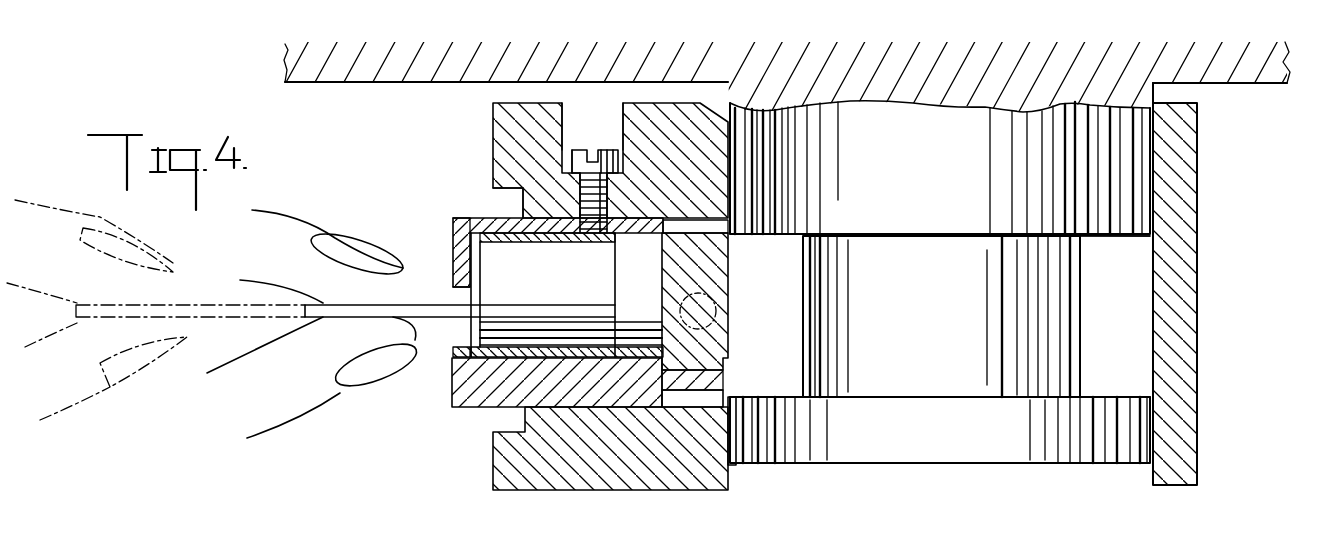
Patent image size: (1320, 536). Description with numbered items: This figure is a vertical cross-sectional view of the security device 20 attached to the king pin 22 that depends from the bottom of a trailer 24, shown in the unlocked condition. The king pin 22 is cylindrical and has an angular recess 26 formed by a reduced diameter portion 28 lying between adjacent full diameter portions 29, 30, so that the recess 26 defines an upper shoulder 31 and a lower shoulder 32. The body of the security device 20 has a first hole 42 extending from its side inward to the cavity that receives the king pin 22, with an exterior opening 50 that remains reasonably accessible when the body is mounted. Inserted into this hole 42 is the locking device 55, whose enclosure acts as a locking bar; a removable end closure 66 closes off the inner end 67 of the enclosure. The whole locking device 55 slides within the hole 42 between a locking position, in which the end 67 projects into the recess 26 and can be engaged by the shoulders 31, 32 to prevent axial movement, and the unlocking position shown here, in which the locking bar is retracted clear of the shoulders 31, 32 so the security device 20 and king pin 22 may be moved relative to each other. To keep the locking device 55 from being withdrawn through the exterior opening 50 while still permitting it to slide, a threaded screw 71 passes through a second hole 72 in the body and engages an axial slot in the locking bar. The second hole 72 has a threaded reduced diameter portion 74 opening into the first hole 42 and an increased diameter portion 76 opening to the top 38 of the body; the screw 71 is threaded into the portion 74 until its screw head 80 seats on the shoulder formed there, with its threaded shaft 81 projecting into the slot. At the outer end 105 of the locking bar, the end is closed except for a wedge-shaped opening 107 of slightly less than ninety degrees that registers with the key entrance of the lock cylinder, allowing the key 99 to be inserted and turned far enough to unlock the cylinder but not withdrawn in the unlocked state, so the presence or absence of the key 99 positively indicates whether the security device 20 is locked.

The security device 20 is at (1205, 322).
The king pin 22 is at (1140, 176).
The trailer 24 is at (1243, 88).
The angular recess 26 is at (1116, 323).
The reduced diameter portion 28 is at (813, 302).
The full diameter portion 29 is at (950, 153).
The full diameter portion 30 is at (829, 463).
The upper shoulder 31 is at (780, 236).
The lower shoulder 32 is at (770, 398).
The top of the body 38 is at (522, 104).
The first hole 42 is at (441, 387).
The exterior opening 50 is at (496, 196).
The locking device 55 is at (445, 242).
The removable end closure 66 is at (722, 264).
The end of the enclosure 67 is at (728, 368).
The threaded screw 71 is at (607, 145).
The second hole 72 is at (602, 112).
The threaded reduced diameter portion 74 is at (607, 189).
The increased diameter portion 76 is at (571, 110).
The screw head 80 is at (587, 150).
The threaded shaft 81 is at (580, 197).
The key 99 is at (330, 309).
The end of the locking bar 105 is at (449, 240).
The wedge-shaped opening 107 is at (448, 293).